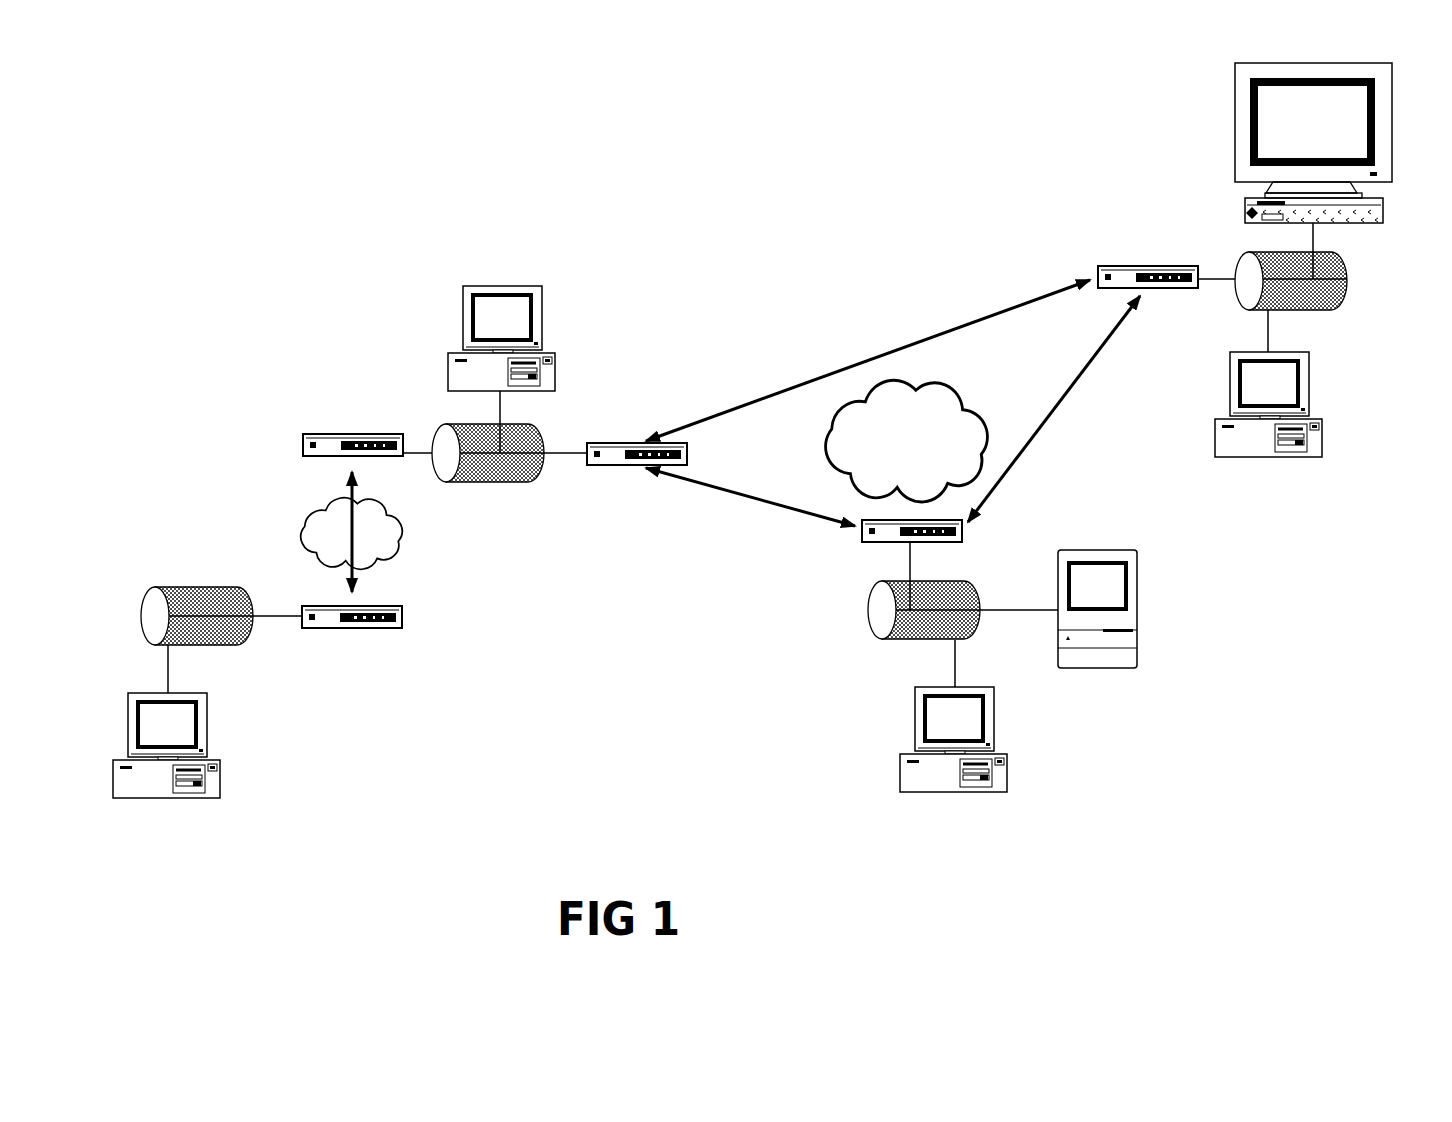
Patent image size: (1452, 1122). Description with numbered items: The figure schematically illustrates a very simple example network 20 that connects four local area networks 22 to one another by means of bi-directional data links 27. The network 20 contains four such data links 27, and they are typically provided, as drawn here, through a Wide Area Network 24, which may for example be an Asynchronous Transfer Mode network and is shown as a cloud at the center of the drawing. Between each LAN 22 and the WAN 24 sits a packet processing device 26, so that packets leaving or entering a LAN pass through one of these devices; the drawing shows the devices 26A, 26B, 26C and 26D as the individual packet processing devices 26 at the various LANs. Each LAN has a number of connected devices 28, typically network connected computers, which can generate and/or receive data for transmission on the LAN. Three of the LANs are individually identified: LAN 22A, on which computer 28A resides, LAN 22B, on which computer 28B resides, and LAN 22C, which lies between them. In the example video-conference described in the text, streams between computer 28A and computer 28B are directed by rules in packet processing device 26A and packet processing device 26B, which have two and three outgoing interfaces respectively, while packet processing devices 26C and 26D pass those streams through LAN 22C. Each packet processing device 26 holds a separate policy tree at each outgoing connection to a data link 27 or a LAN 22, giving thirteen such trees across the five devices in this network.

The network 20 is at (567, 205).
The local area network 22 is at (742, 376).
The local area network 22A is at (150, 560).
The local area network 22B is at (1202, 191).
The local area network 22C is at (402, 343).
The wide area network 24 is at (372, 547).
The packet processing device 26 is at (723, 428).
The packet processing device 26A is at (350, 628).
The packet processing device 26B is at (1174, 268).
The packet processing device 26C is at (331, 445).
The packet processing device 26D is at (605, 450).
The data link 27 is at (348, 482).
The connected device 28 is at (781, 430).
The computer 28A is at (190, 725).
The computer 28B is at (1346, 226).